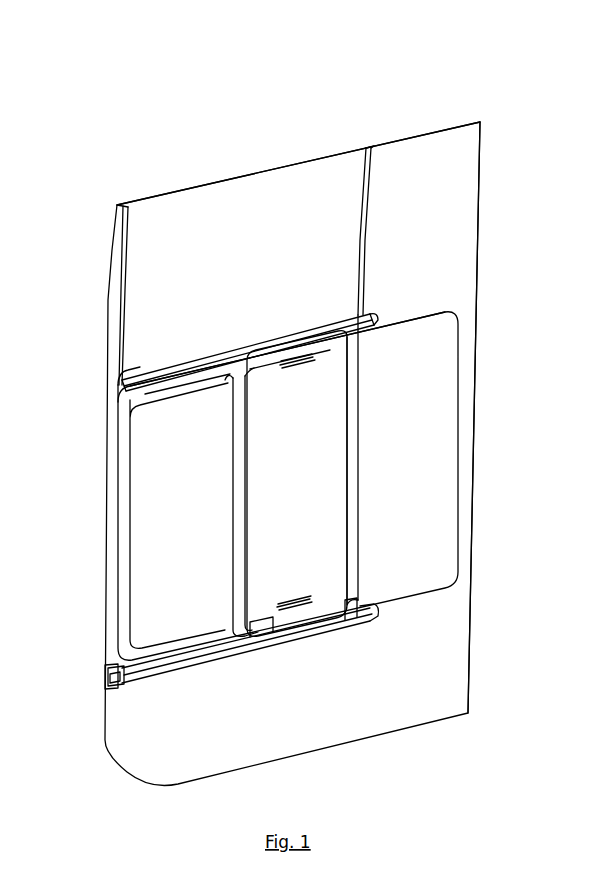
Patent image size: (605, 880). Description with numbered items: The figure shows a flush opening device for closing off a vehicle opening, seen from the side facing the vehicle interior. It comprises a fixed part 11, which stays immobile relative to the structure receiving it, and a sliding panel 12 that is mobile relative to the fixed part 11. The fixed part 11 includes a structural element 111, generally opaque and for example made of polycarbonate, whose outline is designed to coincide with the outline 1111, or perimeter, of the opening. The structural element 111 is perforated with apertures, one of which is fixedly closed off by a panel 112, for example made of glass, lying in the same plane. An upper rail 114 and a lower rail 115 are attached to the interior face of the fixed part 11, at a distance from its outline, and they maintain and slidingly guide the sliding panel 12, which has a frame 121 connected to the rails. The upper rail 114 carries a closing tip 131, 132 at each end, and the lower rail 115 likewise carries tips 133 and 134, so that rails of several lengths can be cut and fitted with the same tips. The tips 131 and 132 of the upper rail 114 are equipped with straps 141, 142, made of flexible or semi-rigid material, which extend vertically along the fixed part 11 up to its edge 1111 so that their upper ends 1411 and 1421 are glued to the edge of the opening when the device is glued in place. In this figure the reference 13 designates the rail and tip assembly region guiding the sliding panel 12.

The fixed part 11 is at (482, 180).
The structural element 111 is at (448, 264).
The outline of the opening 1111 is at (481, 126).
The panel 112 is at (145, 573).
The upper rail 114 is at (123, 370).
The lower rail 115 is at (108, 676).
The sliding panel 12 is at (323, 532).
The frame 121 is at (357, 403).
The frame 13 is at (443, 487).
The closing tip 131 is at (112, 392).
The closing tip 132 is at (400, 318).
The tip 133 is at (107, 685).
The tip 134 is at (370, 617).
The strap 141 is at (122, 246).
The upper end of the strap 1411 is at (128, 205).
The strap 142 is at (366, 172).
The upper end of the strap 1421 is at (372, 148).